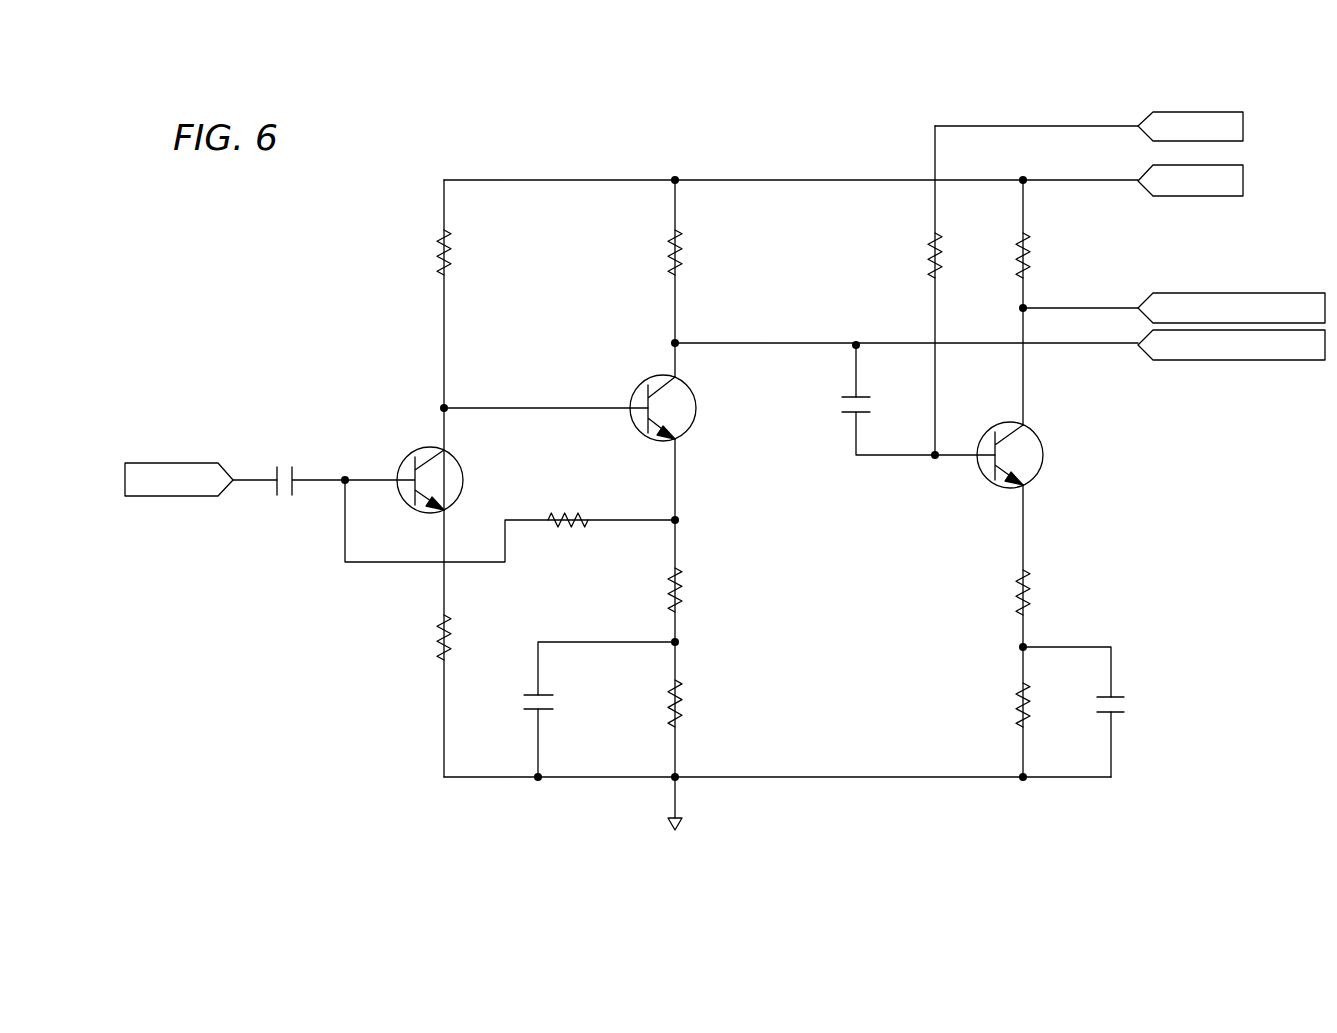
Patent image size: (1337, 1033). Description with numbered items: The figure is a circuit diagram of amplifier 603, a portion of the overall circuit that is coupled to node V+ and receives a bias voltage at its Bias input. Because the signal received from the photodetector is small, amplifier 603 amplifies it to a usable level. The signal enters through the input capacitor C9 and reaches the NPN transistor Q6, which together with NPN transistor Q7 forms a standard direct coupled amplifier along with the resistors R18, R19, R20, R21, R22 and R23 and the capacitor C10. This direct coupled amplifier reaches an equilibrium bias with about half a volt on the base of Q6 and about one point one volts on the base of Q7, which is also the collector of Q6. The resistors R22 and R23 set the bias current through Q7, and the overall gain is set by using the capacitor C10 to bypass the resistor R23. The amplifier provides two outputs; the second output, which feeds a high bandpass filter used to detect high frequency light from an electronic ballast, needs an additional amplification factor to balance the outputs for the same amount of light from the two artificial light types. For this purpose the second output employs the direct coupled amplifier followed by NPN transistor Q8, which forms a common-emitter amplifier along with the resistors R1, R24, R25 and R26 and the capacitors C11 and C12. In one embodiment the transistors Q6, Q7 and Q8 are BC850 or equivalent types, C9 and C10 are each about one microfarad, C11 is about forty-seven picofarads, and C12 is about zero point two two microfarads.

The amplifier 603 is at (1203, 77).
The capacitor C9 is at (288, 464).
The NPN transistor Q6 is at (404, 463).
The NPN transistor Q7 is at (633, 397).
The NPN transistor Q8 is at (1043, 447).
The resistor R18 is at (432, 264).
The resistor R19 is at (434, 634).
The resistor R20 is at (563, 504).
The resistor R21 is at (666, 256).
The resistor R22 is at (687, 586).
The resistor R23 is at (687, 696).
The resistor R24 is at (1032, 257).
The resistor R25 is at (1036, 589).
The resistor R26 is at (1012, 700).
The resistor R1 is at (930, 264).
The capacitor C10 is at (553, 700).
The capacitor C11 is at (844, 411).
The capacitor C12 is at (1128, 704).